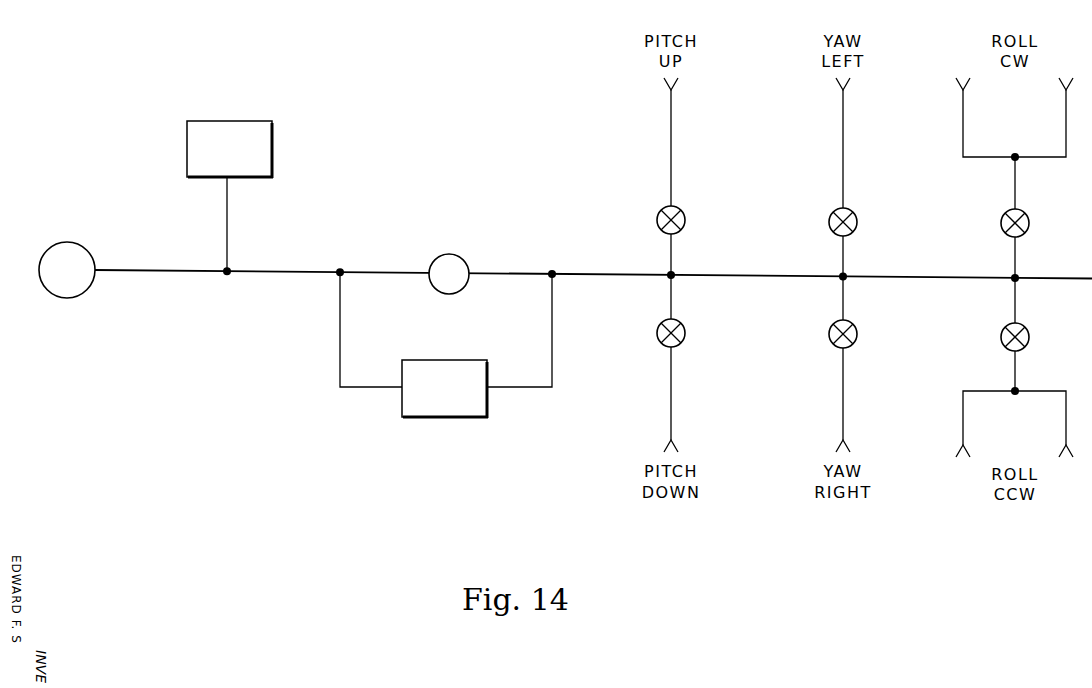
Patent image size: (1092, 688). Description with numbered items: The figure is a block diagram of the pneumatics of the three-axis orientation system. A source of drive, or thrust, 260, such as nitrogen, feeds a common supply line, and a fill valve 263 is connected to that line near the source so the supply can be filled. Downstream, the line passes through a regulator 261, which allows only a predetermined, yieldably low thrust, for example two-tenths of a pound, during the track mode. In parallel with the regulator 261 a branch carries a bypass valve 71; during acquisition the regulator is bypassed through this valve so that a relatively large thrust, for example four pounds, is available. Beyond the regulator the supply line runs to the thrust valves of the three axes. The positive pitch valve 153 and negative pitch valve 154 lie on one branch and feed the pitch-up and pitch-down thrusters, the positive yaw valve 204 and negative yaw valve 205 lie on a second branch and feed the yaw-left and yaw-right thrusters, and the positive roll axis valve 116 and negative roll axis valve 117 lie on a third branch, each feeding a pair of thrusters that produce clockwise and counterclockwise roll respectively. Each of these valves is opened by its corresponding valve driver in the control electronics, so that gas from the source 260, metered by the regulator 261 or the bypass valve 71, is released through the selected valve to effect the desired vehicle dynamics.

The source of drive or thrust 260 is at (87, 297).
The fill valve 263 is at (273, 170).
The regulator 261 is at (465, 258).
The bypass valve 71 is at (430, 357).
The positive pitch valve 153 is at (686, 227).
The negative pitch valve 154 is at (686, 340).
The positive yaw valve 204 is at (858, 229).
The negative yaw valve 205 is at (858, 341).
The positive roll axis valve 116 is at (1030, 230).
The negative roll axis valve 117 is at (1030, 344).